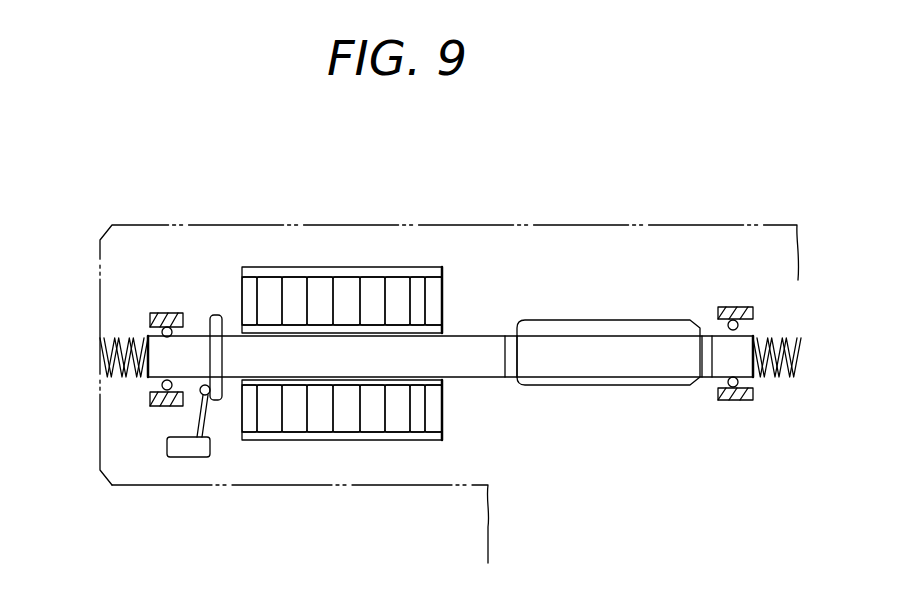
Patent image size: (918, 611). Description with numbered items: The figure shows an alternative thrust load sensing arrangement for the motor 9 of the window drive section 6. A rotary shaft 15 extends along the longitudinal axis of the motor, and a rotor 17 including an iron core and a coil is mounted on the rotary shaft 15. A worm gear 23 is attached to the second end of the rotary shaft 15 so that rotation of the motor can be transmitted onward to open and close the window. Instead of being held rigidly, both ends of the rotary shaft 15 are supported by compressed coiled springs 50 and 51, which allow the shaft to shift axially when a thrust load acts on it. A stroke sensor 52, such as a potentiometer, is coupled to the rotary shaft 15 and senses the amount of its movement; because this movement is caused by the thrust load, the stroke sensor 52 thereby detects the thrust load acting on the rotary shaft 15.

The window drive section 6 is at (702, 212).
The motor 9 is at (193, 225).
The rotary shaft 15 is at (480, 360).
The rotor 17 is at (373, 282).
The worm gear 23 is at (605, 327).
The compressed coiled spring 50 is at (133, 378).
The compressed coiled spring 51 is at (783, 373).
The stroke sensor 52 is at (187, 448).